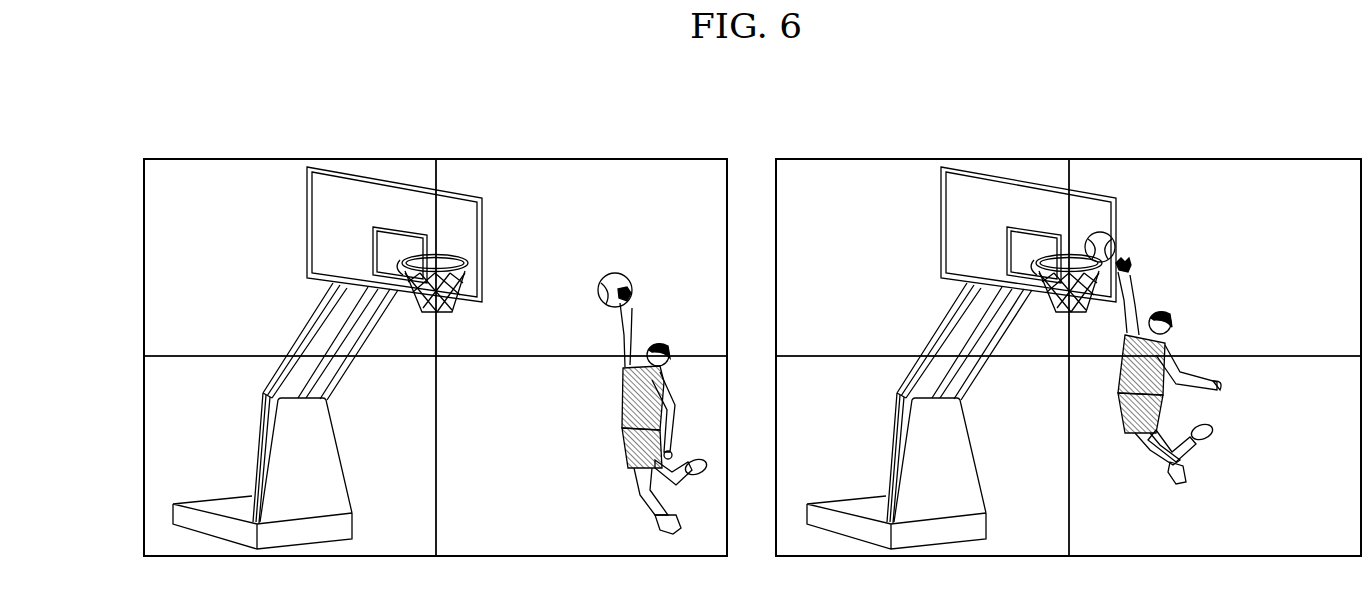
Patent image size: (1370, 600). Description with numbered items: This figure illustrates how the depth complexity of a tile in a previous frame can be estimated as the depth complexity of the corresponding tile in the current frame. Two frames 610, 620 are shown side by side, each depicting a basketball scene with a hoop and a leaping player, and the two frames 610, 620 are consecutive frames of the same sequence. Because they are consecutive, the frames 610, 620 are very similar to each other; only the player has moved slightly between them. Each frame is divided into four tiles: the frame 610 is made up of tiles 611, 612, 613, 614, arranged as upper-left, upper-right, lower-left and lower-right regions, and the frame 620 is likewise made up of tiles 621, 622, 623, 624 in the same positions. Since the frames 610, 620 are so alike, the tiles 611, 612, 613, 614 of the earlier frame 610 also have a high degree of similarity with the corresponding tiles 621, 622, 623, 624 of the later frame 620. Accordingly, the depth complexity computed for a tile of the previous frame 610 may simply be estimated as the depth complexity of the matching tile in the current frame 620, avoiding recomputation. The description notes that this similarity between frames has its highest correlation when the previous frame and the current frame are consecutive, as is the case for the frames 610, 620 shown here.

The frame 610 is at (435, 351).
The tile 611 is at (273, 183).
The tile 612 is at (598, 183).
The tile 613 is at (377, 546).
The tile 614 is at (560, 546).
The frame 620 is at (1068, 351).
The tile 621 is at (886, 183).
The tile 622 is at (1211, 185).
The tile 623 is at (1023, 546).
The tile 624 is at (1208, 547).